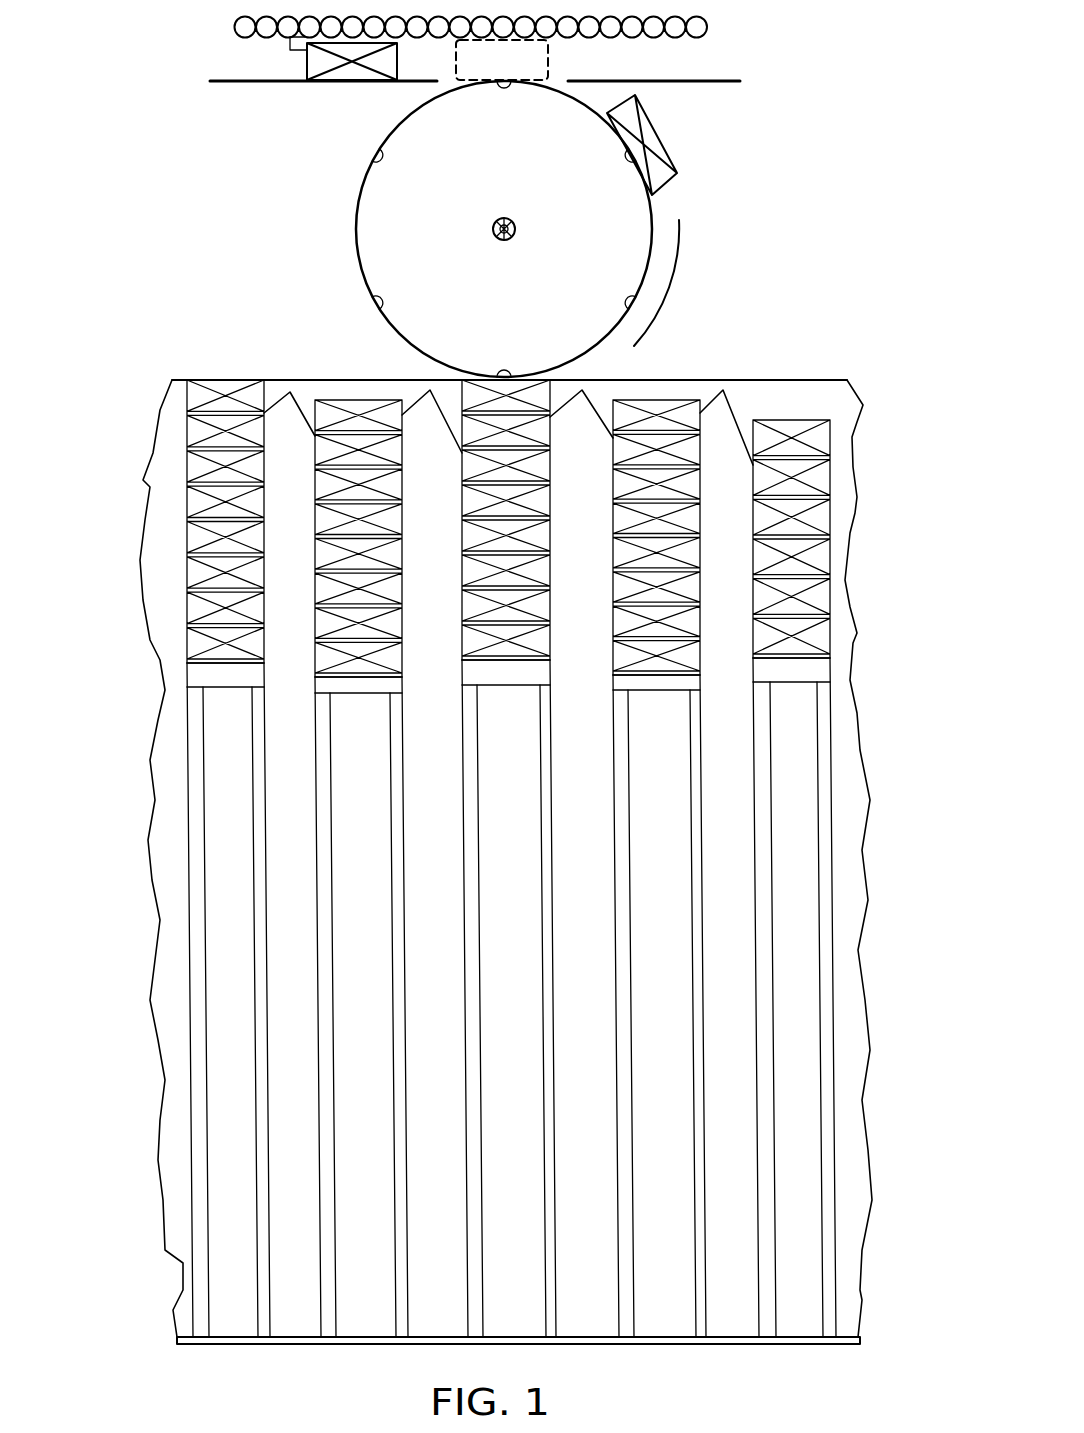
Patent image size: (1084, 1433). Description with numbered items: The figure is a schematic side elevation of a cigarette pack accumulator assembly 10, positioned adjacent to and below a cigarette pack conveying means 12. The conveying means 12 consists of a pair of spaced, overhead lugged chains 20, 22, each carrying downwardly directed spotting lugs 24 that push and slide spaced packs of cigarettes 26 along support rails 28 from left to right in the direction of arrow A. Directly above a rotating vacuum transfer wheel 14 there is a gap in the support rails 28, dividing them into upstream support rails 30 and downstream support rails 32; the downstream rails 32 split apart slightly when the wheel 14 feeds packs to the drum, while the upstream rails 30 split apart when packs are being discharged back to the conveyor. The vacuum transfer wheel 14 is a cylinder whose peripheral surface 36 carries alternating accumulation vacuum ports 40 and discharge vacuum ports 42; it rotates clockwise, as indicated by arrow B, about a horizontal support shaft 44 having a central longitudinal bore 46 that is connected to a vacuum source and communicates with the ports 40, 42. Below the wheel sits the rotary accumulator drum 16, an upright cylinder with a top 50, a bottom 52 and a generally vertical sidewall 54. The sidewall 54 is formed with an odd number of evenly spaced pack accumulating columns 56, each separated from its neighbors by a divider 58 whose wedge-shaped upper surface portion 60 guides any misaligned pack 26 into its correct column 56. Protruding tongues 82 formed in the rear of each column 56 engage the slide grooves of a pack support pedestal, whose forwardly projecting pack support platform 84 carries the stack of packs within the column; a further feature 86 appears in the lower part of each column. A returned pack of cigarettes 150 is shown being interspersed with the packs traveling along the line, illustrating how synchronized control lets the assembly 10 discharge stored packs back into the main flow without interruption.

The cigarette pack accumulator assembly 10 is at (820, 70).
The cigarette pack conveying means 12 is at (750, 37).
The vacuum transfer wheel 14 is at (768, 237).
The accumulator drum 16 is at (868, 508).
The lugged chain 20 is at (396, 51).
The lugged chain 22 is at (242, 21).
The spotting lug 24 is at (290, 43).
The pack of cigarettes 26 is at (350, 72).
The support rails 28 is at (223, 87).
The upstream support rails 30 is at (258, 85).
The downstream support rails 32 is at (707, 85).
The peripheral surface 36 is at (583, 105).
The accumulation vacuum port 40 is at (382, 156).
The discharge vacuum port 42 is at (505, 90).
The transfer wheel support shaft 44 is at (516, 227).
The central longitudinal bore 46 is at (510, 238).
The top 50 is at (767, 380).
The bottom 52 is at (742, 1345).
The sidewall 54 is at (843, 957).
The pack accumulating column 56 is at (215, 971).
The divider 58 is at (572, 445).
The wedge-shaped upper surface portion 60 is at (282, 407).
The protruding tongue 82 is at (205, 830).
The pack support platform 84 is at (210, 660).
The tray bottom 86 is at (230, 688).
The returned pack of cigarettes 150 is at (527, 62).
The direction of pack travel A is at (757, 55).
The drum rotation direction B is at (634, 346).